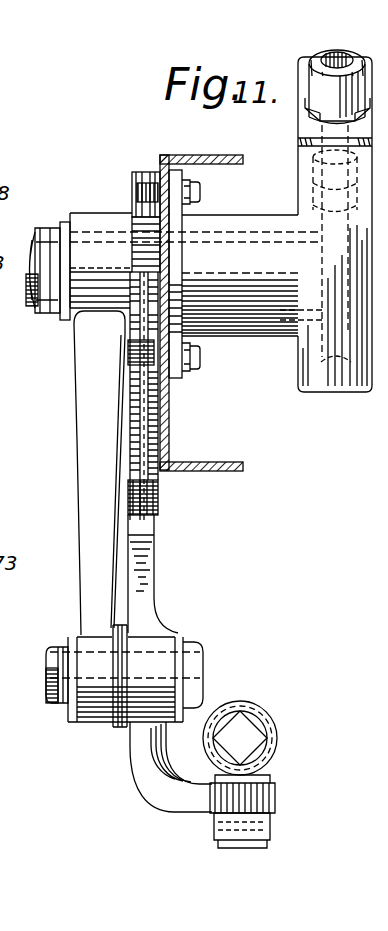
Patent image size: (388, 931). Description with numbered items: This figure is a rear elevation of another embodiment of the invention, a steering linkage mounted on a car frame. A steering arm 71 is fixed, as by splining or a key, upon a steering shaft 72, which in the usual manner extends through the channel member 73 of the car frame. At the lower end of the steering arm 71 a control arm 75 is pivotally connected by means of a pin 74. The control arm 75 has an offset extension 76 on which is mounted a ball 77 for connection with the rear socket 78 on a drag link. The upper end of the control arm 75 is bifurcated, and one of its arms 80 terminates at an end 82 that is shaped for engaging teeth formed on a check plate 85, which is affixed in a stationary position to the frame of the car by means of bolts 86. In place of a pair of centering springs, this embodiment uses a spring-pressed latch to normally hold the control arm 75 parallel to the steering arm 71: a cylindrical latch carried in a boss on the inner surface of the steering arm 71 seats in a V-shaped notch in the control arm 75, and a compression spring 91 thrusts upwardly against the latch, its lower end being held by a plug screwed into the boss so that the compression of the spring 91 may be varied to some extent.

The steering arm 71 is at (83, 410).
The steering shaft 72 is at (26, 262).
The channel member 73 is at (209, 462).
The pin 74 is at (47, 664).
The control arm 75 is at (146, 577).
The offset extension 76 is at (150, 781).
The ball 77 is at (276, 740).
The rear socket 78 is at (263, 716).
The arm 80 is at (135, 413).
The terminal end 82 is at (145, 270).
The check plate 85 is at (145, 215).
The bolts 86 is at (197, 196).
The compression spring 91 is at (158, 493).